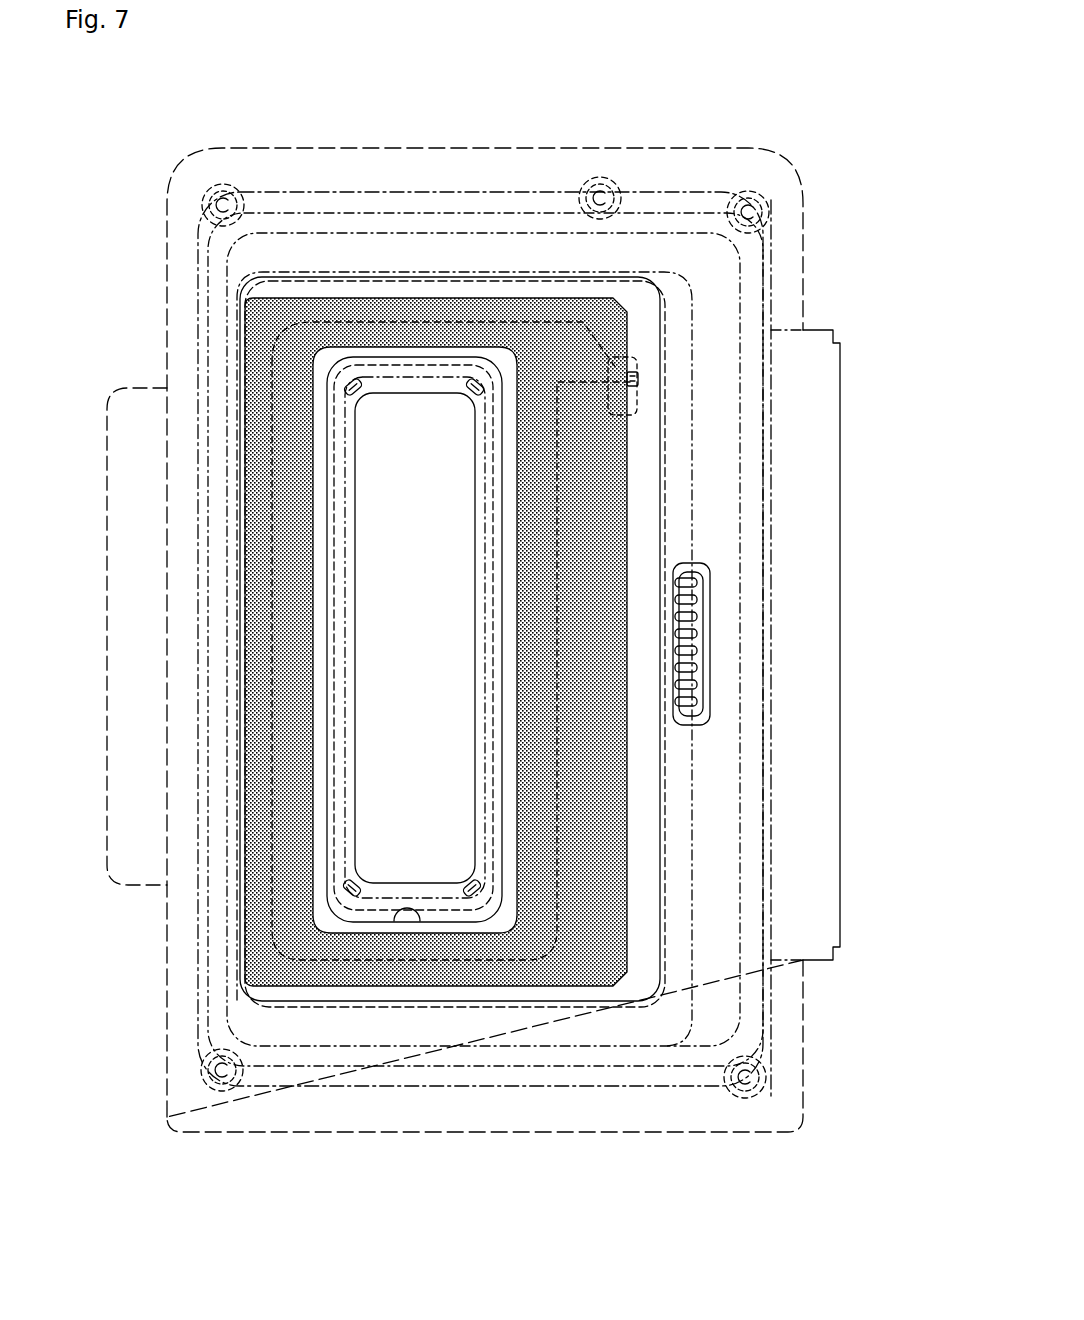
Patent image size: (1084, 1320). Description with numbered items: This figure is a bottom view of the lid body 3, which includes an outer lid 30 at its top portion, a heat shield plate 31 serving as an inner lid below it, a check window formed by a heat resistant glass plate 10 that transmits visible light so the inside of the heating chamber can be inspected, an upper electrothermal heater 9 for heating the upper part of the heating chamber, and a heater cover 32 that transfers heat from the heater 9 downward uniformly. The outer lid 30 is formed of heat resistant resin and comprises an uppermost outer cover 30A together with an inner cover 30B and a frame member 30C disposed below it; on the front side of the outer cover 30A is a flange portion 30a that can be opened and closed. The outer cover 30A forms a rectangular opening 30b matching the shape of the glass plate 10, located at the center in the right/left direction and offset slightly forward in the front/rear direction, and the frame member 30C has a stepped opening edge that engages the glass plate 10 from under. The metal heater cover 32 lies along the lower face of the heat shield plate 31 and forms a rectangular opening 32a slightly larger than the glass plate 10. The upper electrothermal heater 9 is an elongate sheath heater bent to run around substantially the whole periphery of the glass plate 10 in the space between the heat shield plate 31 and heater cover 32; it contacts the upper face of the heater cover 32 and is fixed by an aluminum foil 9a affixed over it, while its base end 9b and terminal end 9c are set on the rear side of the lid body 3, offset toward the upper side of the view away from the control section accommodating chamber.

The lid body 3 is at (560, 138).
The outer lid 30 is at (275, 148).
The outer cover 30A is at (372, 148).
The inner cover 30B is at (477, 162).
The frame member 30C is at (378, 897).
The flange portion 30a is at (127, 418).
The opening 30b is at (462, 660).
The heat shield plate 31 is at (772, 990).
The heater cover 32 is at (633, 990).
The opening 32a is at (413, 908).
The upper electrothermal heater 9 is at (507, 1005).
The aluminum foil 9a is at (577, 970).
The base end 9b is at (633, 376).
The terminal end 9c is at (634, 383).
The heat resistant glass plate 10 is at (375, 824).